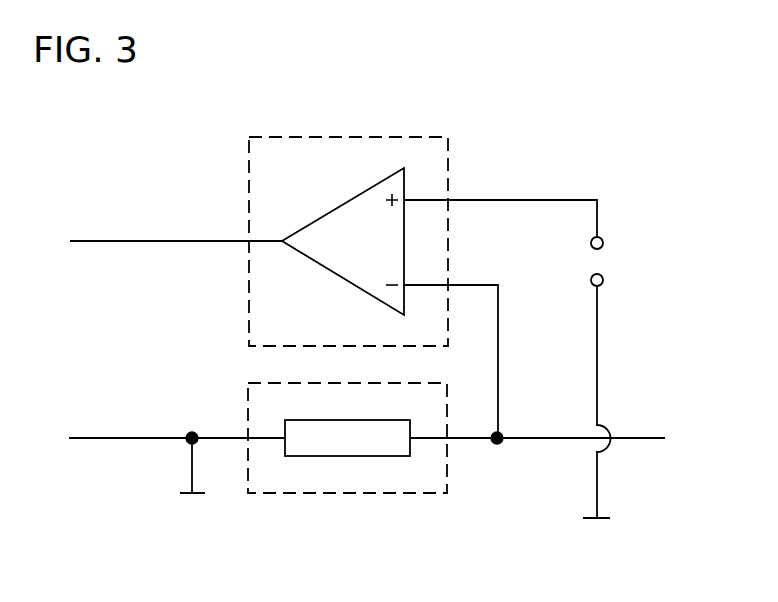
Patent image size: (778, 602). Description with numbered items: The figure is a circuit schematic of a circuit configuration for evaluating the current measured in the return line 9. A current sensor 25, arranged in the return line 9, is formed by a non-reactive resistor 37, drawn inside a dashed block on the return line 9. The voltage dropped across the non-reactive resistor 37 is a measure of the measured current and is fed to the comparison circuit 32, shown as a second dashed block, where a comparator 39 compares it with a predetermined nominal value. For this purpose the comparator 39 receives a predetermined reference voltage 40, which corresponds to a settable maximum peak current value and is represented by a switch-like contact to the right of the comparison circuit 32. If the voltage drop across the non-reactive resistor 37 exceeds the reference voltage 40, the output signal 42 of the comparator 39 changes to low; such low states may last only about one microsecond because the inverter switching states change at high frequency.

The return line 9 is at (133, 437).
The current sensor 25 is at (348, 495).
The comparison circuit 32 is at (323, 135).
The non-reactive resistor 37 is at (366, 449).
The comparator 39 is at (347, 222).
The reference voltage 40 is at (602, 261).
The output signal 42 is at (165, 243).